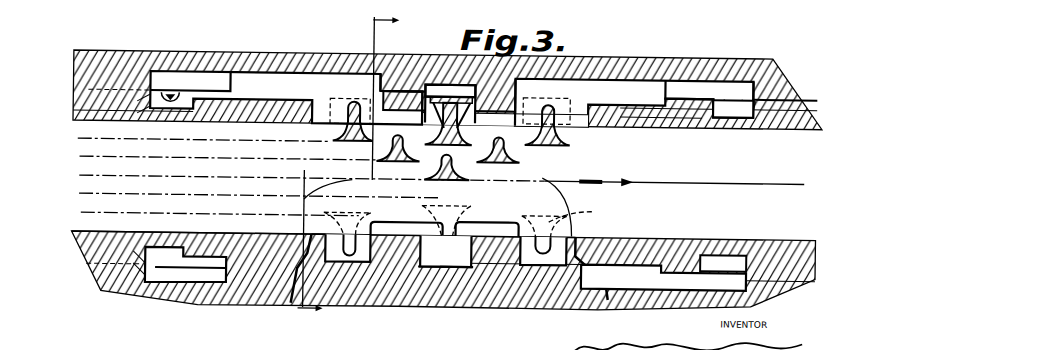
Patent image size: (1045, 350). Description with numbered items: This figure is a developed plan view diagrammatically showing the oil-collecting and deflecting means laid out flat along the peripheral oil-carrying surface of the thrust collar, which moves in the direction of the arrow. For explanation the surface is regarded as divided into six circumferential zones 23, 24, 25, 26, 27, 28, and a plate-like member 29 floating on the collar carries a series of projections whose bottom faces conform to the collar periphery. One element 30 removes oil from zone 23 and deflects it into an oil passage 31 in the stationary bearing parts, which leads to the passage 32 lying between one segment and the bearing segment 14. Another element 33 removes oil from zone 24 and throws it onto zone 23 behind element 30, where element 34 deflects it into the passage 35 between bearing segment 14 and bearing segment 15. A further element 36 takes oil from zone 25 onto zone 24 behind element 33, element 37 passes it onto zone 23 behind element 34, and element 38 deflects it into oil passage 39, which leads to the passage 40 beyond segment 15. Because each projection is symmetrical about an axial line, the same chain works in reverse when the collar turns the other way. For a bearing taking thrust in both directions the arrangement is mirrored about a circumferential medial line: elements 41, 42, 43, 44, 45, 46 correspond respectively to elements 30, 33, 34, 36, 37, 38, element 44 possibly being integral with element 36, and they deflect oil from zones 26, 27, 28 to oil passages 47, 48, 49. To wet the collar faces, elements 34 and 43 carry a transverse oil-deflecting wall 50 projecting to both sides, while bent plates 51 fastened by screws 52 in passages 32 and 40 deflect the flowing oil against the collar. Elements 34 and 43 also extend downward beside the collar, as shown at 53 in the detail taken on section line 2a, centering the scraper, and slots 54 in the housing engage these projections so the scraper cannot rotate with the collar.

The section line 2a is at (346, 170).
The bearing segment 14 is at (367, 239).
The bearing segment 15 is at (560, 114).
The circumferential zone 23 is at (204, 133).
The circumferential zone 24 is at (227, 152).
The circumferential zone 25 is at (311, 171).
The circumferential zone 26 is at (259, 188).
The circumferential zone 27 is at (220, 207).
The circumferential zone 28 is at (199, 227).
The plate-like member 29 is at (560, 173).
The oil-removing element 30 is at (338, 97).
The oil passage 31 is at (275, 87).
The oil passage 32 is at (143, 269).
The oil-removing element 33 is at (360, 76).
The oil-removing element 34 is at (443, 78).
The oil passage 35 is at (418, 139).
The oil-removing element 36 is at (436, 170).
The oil-removing element 37 is at (520, 152).
The oil-removing element 38 is at (565, 132).
The oil passage 39 is at (618, 81).
The oil passage 40 is at (753, 81).
The oil-removing element 41 is at (305, 224).
The oil-removing element 42 is at (400, 196).
The oil-removing element 43 is at (446, 233).
The oil-removing element 44 is at (468, 193).
The oil-removing element 45 is at (548, 179).
The oil-removing element 46 is at (581, 212).
The oil passage 47 is at (260, 271).
The oil passage 48 is at (443, 265).
The oil passage 49 is at (632, 268).
The transverse oil-deflecting wall 50 is at (425, 85).
The bent plate 51 is at (140, 112).
The screw 52 is at (160, 96).
The downward extension 53 is at (460, 110).
The slot 54 is at (400, 79).